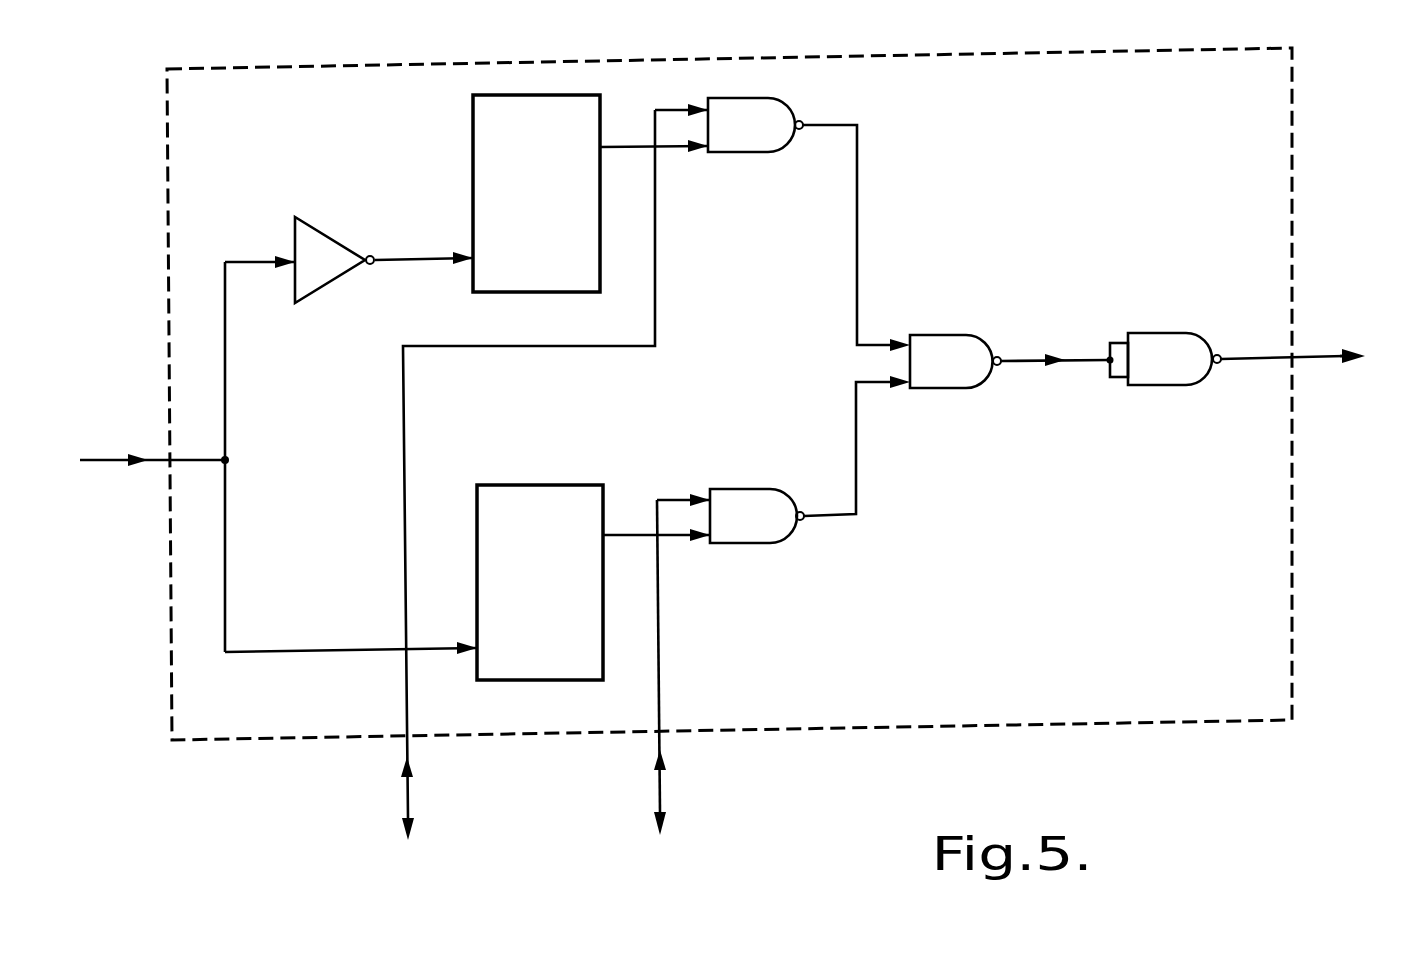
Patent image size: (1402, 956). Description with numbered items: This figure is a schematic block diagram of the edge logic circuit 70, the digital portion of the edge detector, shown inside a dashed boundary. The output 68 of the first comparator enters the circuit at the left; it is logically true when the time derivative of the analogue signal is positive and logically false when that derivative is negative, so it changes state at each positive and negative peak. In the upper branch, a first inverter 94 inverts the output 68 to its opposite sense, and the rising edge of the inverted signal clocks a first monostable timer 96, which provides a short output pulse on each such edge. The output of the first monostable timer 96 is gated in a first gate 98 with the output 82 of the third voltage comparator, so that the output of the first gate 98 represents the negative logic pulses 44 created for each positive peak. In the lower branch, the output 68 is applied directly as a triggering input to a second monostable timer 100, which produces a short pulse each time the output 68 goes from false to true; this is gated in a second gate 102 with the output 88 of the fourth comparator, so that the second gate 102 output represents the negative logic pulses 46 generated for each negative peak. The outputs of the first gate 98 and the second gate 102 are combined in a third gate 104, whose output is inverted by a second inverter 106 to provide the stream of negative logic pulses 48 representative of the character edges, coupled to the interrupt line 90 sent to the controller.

The edge logic circuit 70 is at (168, 205).
The output of the first comparator 68 is at (100, 462).
The first inverter 94 is at (333, 283).
The first monostable timer 96 is at (473, 162).
The first gate 98 is at (745, 155).
The output of the third voltage comparator 82 is at (407, 793).
The negative logic pulses 44 is at (857, 195).
The second monostable timer 100 is at (565, 483).
The second gate 102 is at (772, 545).
The output of the fourth comparator 88 is at (662, 790).
The negative logic pulses 46 is at (856, 440).
The third gate 104 is at (953, 337).
The second inverter 106 is at (1158, 335).
The negative logic pulses 48 is at (1237, 360).
The interrupt line 90 is at (1312, 355).